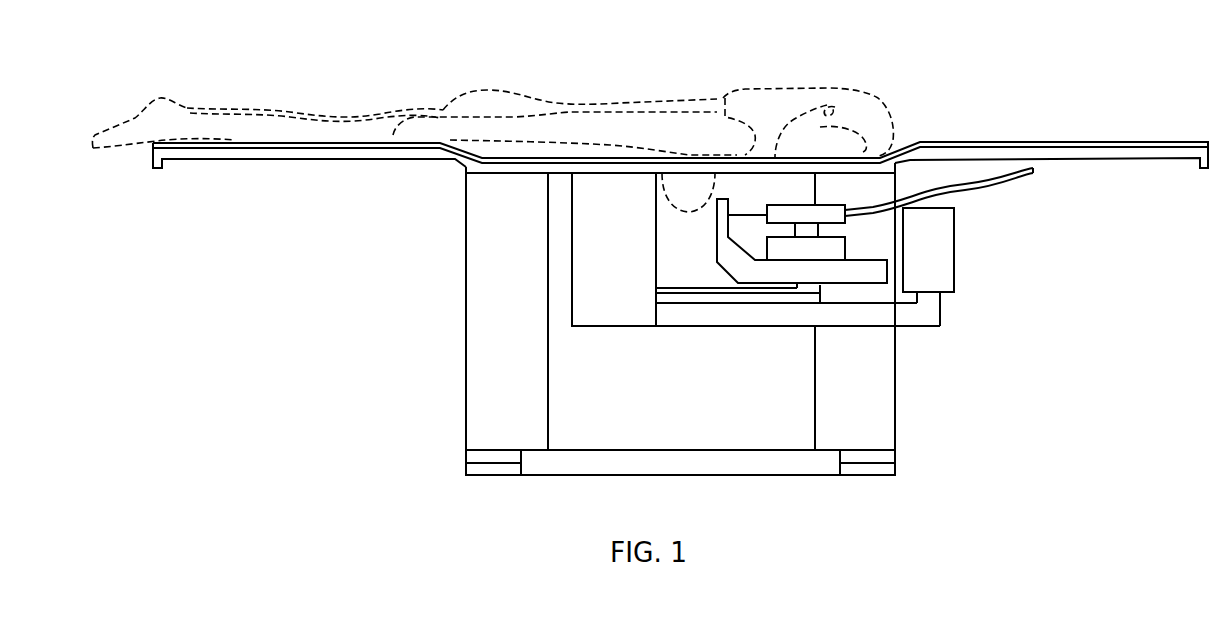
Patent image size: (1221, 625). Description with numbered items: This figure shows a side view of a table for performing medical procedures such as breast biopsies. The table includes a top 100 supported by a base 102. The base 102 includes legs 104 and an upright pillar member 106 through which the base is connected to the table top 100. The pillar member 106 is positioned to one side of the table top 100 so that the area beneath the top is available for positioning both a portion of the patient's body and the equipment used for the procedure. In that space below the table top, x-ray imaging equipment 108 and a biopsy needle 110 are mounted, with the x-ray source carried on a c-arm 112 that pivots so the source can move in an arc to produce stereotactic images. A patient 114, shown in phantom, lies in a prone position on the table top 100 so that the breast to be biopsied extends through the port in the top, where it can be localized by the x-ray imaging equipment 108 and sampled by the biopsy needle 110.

The top 100 is at (302, 153).
The base 102 is at (406, 303).
The legs 104 is at (475, 457).
The upright pillar member 106 is at (622, 228).
The x-ray imaging equipment 108 is at (938, 249).
The biopsy needle 110 is at (822, 215).
The c-arm 112 is at (927, 315).
The patient 114 is at (635, 100).